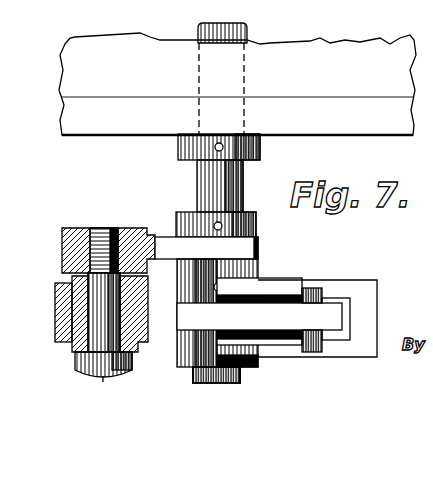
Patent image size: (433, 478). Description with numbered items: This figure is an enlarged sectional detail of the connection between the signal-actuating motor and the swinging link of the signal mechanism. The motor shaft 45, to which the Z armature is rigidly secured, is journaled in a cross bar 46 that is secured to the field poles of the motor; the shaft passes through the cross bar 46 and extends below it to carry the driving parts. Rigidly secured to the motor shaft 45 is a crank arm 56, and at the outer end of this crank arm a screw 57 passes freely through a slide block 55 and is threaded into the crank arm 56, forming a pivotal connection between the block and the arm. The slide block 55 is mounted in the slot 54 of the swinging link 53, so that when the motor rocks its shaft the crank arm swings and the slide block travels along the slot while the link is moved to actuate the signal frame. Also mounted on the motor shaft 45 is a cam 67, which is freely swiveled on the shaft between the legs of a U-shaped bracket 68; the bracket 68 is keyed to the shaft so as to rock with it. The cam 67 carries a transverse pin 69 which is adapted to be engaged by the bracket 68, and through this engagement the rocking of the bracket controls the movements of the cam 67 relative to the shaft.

The motor shaft 45 is at (240, 187).
The cross bar 46 is at (383, 128).
The swinging link 53 is at (67, 320).
The slot 54 is at (85, 290).
The slide block 55 is at (137, 280).
The crank arm 56 is at (72, 240).
The screw 57 is at (133, 365).
The cam 67 is at (258, 320).
The U-shaped bracket 68 is at (343, 292).
The transverse pin 69 is at (313, 342).